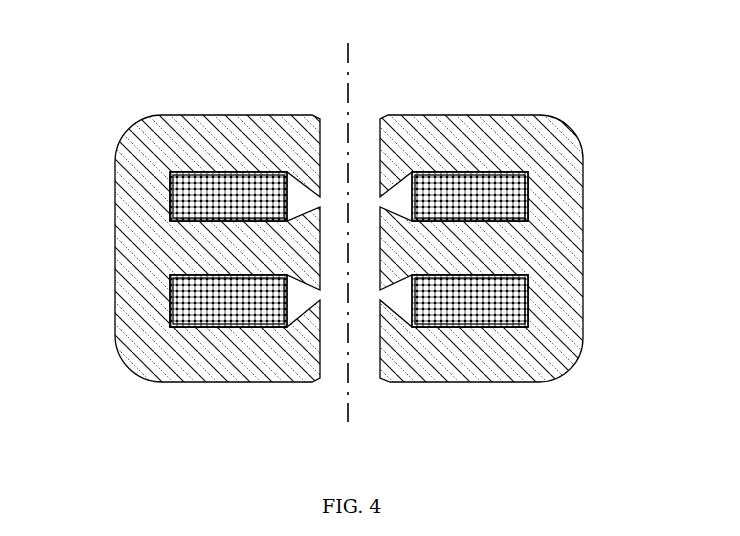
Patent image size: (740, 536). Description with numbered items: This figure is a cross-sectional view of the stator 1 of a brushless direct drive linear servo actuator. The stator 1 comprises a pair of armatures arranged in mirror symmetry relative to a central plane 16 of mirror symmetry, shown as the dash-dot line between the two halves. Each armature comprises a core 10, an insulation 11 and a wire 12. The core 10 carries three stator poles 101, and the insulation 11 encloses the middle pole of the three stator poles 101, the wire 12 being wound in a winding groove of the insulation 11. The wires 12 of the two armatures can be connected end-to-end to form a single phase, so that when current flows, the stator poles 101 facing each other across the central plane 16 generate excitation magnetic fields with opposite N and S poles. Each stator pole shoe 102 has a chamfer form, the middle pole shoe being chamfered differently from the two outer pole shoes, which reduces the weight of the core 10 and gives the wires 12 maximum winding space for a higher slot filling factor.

The stator 1 is at (521, 201).
The core 10 is at (553, 243).
The insulation 11 is at (532, 182).
The wire 12 is at (530, 285).
The central plane of mirror symmetry 16 is at (347, 117).
The stator poles 101 is at (205, 133).
The stator pole shoe 102 is at (270, 122).